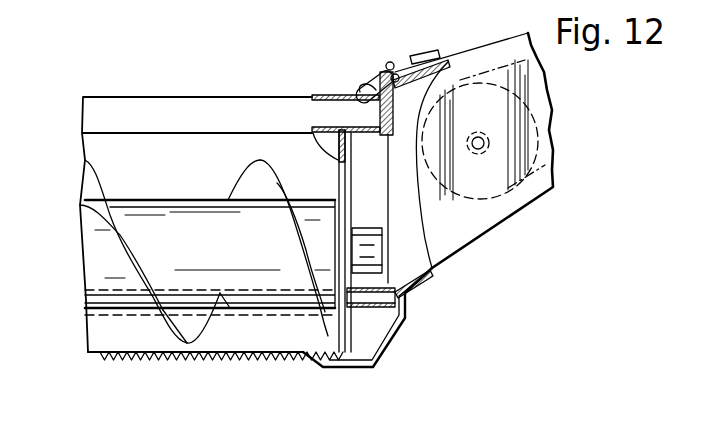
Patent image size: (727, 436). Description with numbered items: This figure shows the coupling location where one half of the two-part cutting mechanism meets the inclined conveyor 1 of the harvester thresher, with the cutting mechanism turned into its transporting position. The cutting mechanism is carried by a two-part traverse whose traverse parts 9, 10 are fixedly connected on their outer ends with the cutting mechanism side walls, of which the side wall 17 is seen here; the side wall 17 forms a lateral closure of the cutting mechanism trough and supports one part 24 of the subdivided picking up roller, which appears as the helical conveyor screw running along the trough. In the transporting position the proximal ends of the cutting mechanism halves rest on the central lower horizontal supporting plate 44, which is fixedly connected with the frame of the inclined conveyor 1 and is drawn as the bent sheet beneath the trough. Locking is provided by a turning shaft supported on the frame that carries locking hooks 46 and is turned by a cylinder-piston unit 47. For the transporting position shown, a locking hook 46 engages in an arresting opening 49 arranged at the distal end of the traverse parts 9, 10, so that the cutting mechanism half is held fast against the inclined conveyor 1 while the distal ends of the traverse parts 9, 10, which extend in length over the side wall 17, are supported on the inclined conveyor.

The inclined conveyor 1 is at (487, 60).
The traverse part 9 is at (265, 199).
The traverse part 10 is at (152, 110).
The cutting mechanism side wall 17 is at (342, 193).
The picking up roller part 24 is at (237, 280).
The central lower horizontal supporting plate 44 is at (388, 340).
The locking hook 46 is at (370, 80).
The cylinder-piston unit 47 is at (415, 53).
The arresting opening 49 is at (360, 92).